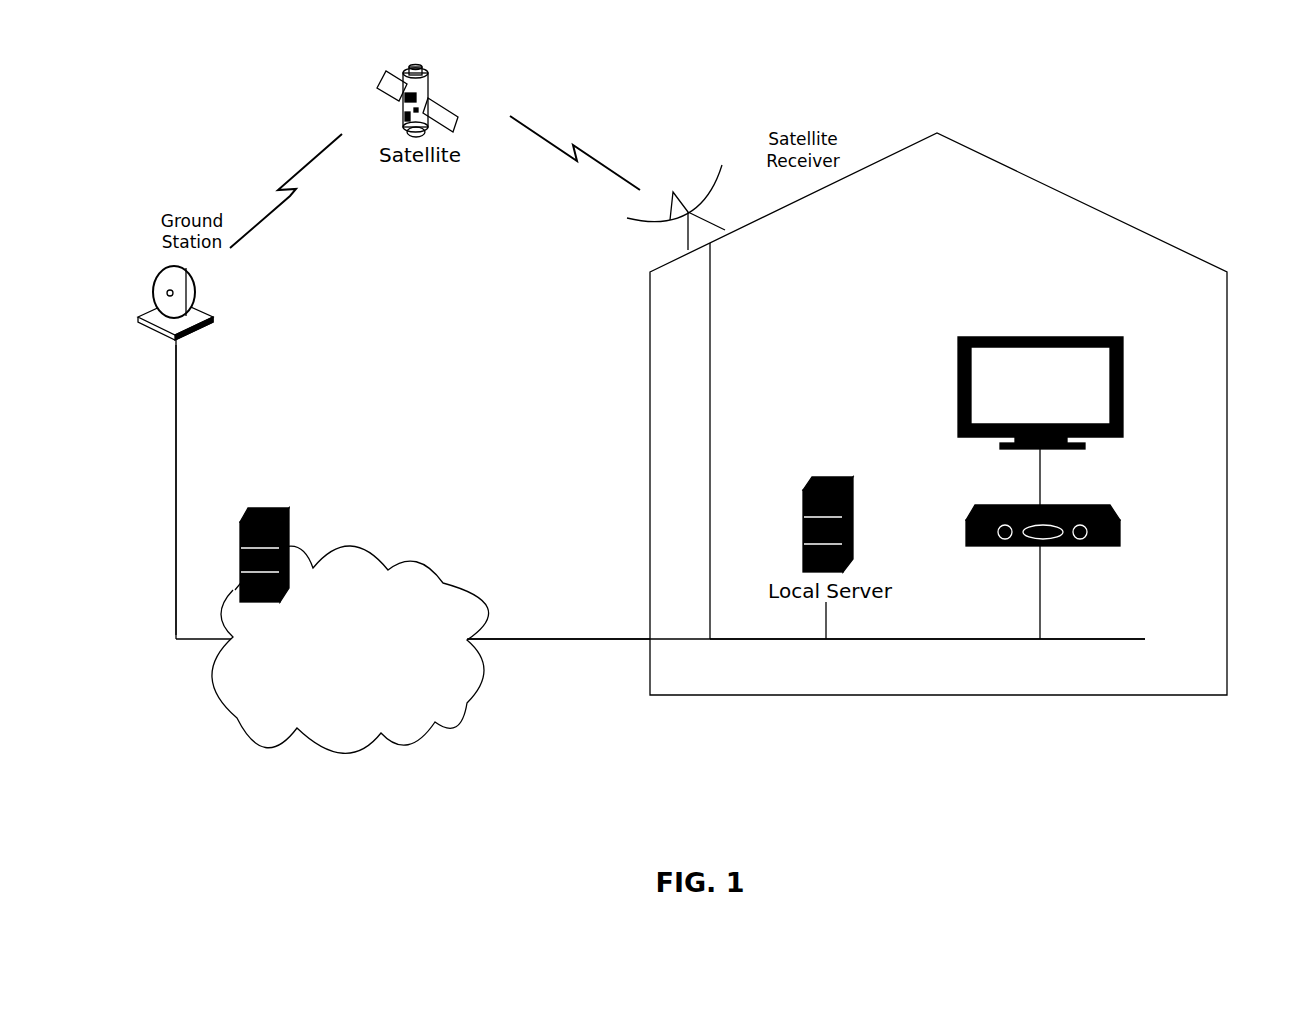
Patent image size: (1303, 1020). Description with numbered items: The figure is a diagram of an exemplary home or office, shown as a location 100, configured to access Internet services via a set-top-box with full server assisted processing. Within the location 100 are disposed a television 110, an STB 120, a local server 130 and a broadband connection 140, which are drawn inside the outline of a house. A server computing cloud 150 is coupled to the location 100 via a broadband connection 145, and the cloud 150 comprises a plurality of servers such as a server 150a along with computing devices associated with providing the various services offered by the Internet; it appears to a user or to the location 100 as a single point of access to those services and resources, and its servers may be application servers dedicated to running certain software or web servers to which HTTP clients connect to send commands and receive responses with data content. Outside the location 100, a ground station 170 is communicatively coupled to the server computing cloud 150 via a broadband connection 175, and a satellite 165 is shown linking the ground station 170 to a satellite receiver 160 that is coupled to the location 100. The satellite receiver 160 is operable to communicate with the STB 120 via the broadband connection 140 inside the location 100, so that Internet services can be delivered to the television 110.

The location 100 is at (1228, 388).
The television 110 is at (1125, 363).
The STB 120 is at (1118, 528).
The local server 130 is at (856, 510).
The broadband connection 140 is at (893, 639).
The broadband connection 145 is at (565, 639).
The server computing cloud 150 is at (482, 621).
The server 150a is at (293, 537).
The satellite receiver 160 is at (720, 190).
The satellite 165 is at (438, 95).
The ground station 170 is at (213, 320).
The broadband connection 175 is at (176, 467).